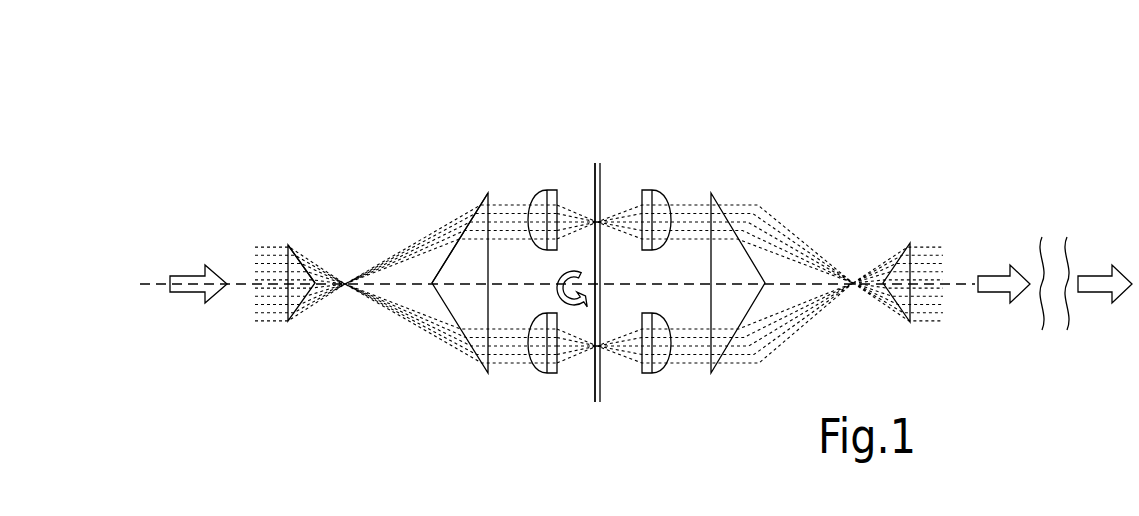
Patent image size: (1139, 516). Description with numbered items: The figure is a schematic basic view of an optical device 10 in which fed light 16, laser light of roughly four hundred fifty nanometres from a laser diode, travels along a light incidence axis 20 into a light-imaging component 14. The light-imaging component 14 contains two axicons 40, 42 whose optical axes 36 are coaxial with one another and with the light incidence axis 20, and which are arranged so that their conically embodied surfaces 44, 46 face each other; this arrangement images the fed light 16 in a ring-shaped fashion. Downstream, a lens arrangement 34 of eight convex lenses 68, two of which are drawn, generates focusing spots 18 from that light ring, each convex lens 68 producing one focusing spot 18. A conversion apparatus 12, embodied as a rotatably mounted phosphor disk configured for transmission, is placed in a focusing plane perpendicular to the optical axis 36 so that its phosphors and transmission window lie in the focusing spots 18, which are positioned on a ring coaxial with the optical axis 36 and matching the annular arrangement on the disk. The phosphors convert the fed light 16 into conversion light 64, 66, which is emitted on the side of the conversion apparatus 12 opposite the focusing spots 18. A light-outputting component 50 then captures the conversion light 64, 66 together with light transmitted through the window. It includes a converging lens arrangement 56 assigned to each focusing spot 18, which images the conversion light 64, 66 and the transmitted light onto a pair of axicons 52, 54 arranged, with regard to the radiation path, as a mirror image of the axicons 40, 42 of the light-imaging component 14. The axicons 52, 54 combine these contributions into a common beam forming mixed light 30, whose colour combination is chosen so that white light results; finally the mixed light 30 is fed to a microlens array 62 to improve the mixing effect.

The optical device 10 is at (520, 143).
The conversion apparatus 12 is at (601, 163).
The light-imaging component 14 is at (390, 204).
The light fed 16 is at (192, 292).
The focusing spots 18 is at (594, 220).
The light incidence axis 20 is at (163, 284).
The mixed light 30 is at (990, 277).
The lens arrangement 34 is at (527, 373).
The optical axis 36 is at (362, 303).
The axicon 40 is at (290, 321).
The axicon 42 is at (485, 366).
The conically embodied surface 44 is at (291, 247).
The conically embodied surface 46 is at (467, 207).
The light-outputting component 50 is at (828, 175).
The axicon 52 is at (900, 243).
The axicon 54 is at (713, 193).
The converging lens arrangement 56 is at (663, 167).
The microlens array 62 is at (1067, 247).
The conversion light 64 is at (680, 366).
The conversion light 66 is at (678, 202).
The convex lenses 68 is at (543, 190).